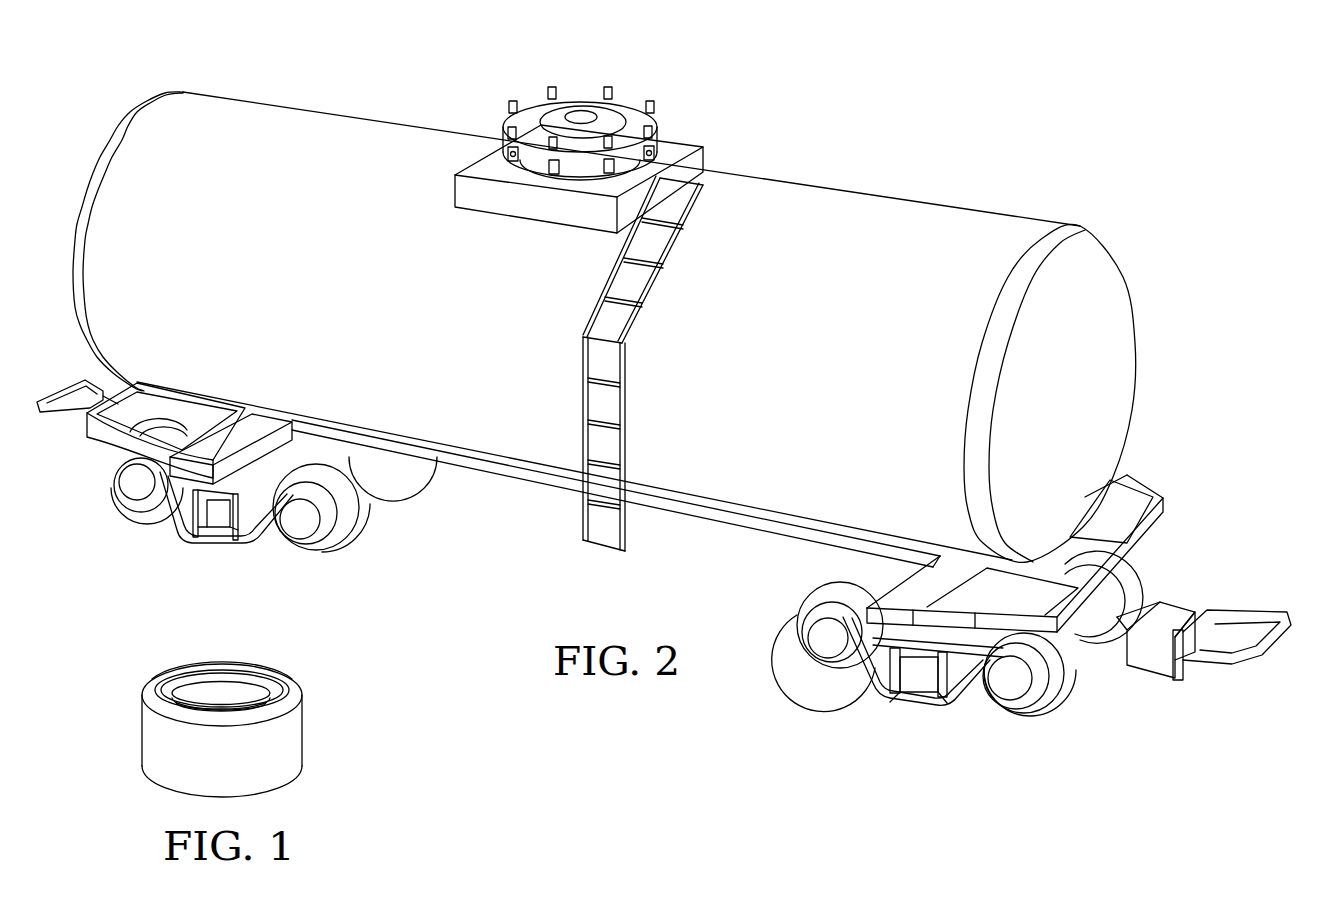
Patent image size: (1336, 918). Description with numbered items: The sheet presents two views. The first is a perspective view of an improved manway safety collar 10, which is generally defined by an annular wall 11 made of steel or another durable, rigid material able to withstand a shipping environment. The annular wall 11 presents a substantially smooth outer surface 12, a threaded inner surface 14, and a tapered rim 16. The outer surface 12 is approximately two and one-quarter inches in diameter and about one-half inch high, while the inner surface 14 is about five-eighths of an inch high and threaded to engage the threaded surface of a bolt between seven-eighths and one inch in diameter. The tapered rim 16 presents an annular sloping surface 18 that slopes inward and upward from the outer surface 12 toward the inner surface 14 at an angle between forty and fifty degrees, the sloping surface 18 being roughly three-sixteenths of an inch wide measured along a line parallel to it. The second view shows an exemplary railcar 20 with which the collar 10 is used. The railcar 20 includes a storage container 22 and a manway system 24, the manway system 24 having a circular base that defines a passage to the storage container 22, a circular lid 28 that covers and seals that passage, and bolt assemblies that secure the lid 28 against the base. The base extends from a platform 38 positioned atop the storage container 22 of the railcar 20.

In FIG. 1, the manway safety collar 10 is at (86, 709).
In FIG. 1, the annular wall 11 is at (262, 664).
In FIG. 1, the outer surface 12 is at (280, 737).
In FIG. 1, the inner surface 14 is at (200, 695).
In FIG. 1, the tapered rim 16 is at (152, 698).
In FIG. 1, the sloping surface 18 is at (297, 685).
In FIG. 2, the railcar 20 is at (950, 179).
In FIG. 2, the storage container 22 is at (777, 200).
In FIG. 2, the manway system 24 is at (534, 86).
In FIG. 2, the lid 28 is at (627, 121).
In FIG. 2, the platform 38 is at (470, 192).